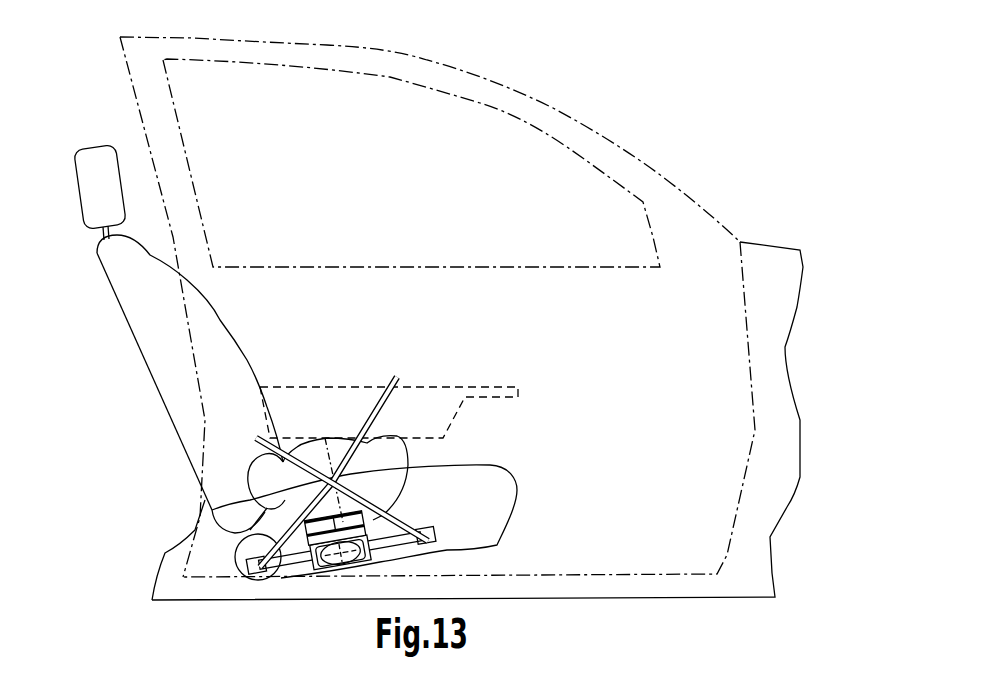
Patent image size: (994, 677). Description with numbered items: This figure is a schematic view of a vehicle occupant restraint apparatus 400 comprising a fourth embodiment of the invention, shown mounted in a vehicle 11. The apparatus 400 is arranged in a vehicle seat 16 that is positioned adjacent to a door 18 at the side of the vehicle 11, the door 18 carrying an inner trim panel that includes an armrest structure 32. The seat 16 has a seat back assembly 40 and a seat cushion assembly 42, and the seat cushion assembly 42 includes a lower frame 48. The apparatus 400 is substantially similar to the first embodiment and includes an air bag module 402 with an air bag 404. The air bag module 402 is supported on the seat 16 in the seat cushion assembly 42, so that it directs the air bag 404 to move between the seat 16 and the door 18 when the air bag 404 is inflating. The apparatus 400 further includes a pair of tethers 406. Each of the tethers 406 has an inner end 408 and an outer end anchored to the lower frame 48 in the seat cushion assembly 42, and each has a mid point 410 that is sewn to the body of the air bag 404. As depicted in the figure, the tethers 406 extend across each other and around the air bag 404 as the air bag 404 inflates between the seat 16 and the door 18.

The vehicle 11 is at (622, 146).
The vehicle seat 16 is at (310, 361).
The door 18 is at (200, 414).
The armrest structure 32 is at (488, 387).
The seat back assembly 40 is at (168, 380).
The seat cushion assembly 42 is at (502, 490).
The lower frame 48 is at (436, 536).
The vehicle occupant restraint apparatus 400 is at (428, 458).
The air bag module 402 is at (314, 580).
The air bag 404 is at (302, 437).
The tethers 406 is at (300, 506).
The inner end 408 is at (255, 568).
The mid point 410 is at (398, 376).